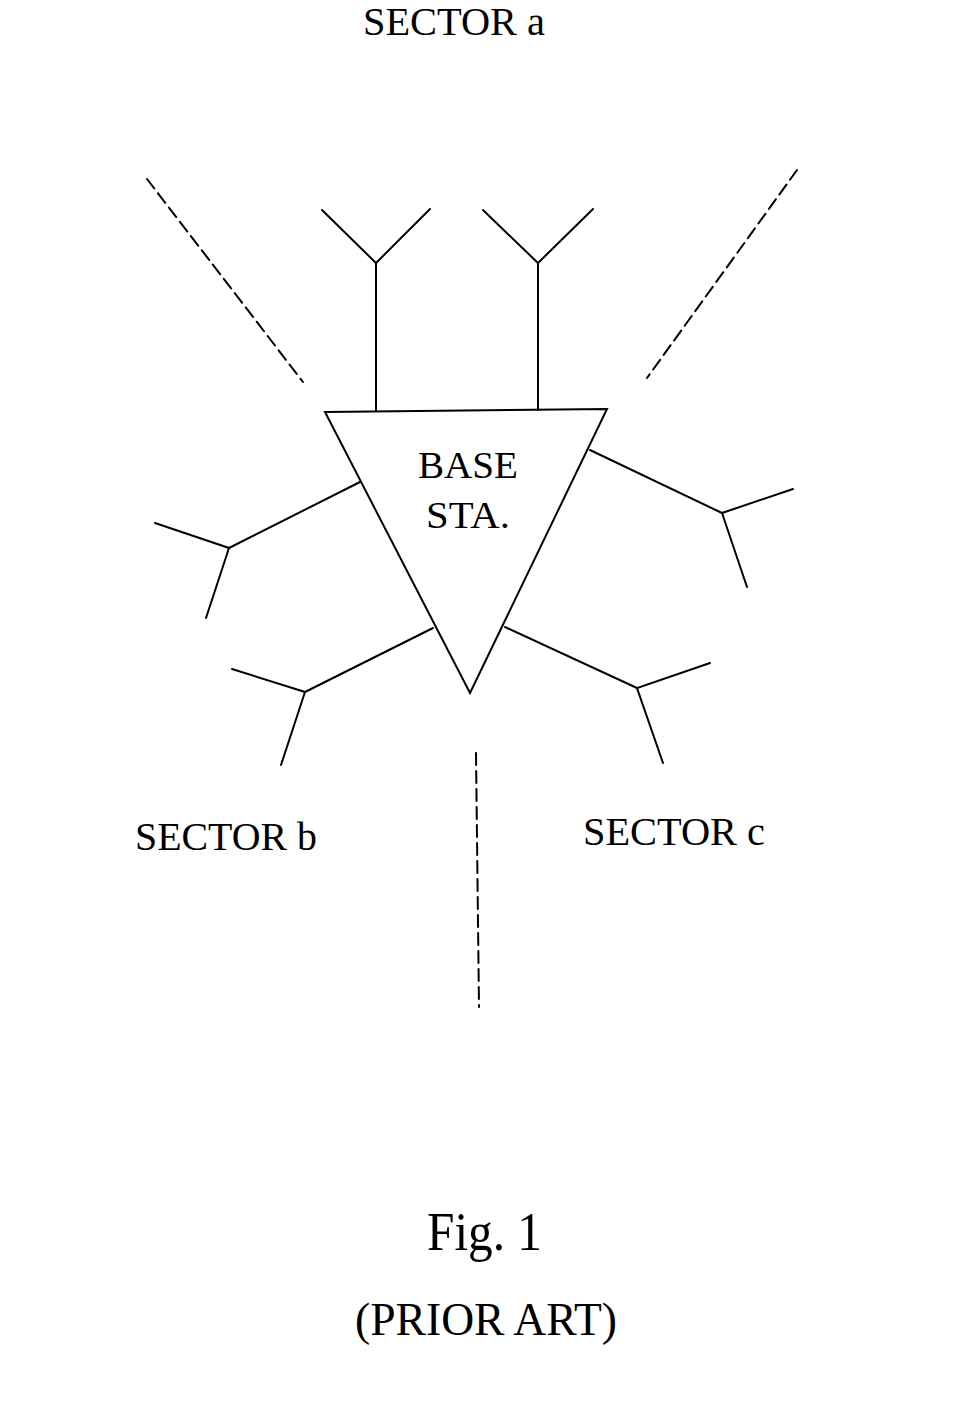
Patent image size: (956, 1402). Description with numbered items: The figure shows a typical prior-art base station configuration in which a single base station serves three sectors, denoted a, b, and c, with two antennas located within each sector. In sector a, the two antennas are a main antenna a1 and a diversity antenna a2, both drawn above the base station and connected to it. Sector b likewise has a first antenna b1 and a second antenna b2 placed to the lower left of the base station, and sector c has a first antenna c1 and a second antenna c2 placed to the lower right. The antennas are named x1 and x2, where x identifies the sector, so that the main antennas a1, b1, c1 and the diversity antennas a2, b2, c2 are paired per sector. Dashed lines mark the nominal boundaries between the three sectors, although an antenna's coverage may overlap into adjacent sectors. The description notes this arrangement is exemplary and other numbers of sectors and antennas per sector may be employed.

The main antenna a1 is at (376, 276).
The diversity antenna a2 is at (538, 273).
The main antenna b1 is at (243, 550).
The diversity antenna b2 is at (312, 696).
The main antenna c1 is at (709, 518).
The diversity antenna c2 is at (621, 695).